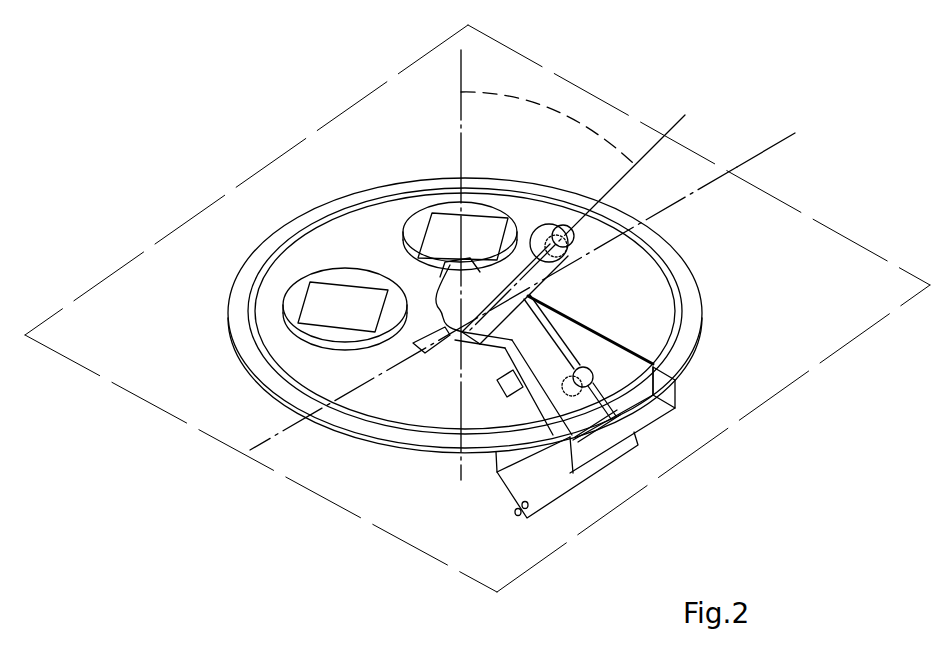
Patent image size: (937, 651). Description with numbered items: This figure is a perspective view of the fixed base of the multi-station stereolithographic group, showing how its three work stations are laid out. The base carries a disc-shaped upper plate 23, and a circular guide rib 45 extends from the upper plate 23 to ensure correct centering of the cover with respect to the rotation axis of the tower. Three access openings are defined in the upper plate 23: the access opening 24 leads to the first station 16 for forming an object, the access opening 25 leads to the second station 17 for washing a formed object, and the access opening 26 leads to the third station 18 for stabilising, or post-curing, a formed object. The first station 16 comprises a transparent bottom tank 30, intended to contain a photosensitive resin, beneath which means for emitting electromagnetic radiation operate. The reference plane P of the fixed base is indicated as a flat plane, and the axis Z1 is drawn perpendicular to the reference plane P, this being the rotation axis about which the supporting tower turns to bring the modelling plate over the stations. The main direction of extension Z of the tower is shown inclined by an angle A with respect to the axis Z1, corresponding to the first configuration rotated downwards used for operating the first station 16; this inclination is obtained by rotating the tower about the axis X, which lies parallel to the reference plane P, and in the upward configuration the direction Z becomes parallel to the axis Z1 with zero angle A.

The first station 16 is at (682, 393).
The second station 17 is at (418, 321).
The third station 18 is at (458, 187).
The upper plate 23 is at (647, 307).
The access opening 24 is at (633, 353).
The access opening 25 is at (322, 303).
The access opening 26 is at (435, 240).
The transparent bottom tank 30 is at (567, 527).
The circular guide rib 45 is at (660, 257).
The axis perpendicular to the reference plane Z1 is at (461, 70).
The angle A is at (543, 100).
The main direction of extension Z is at (581, 212).
The axis parallel to the reference plane X is at (795, 133).
The reference plane P is at (783, 393).